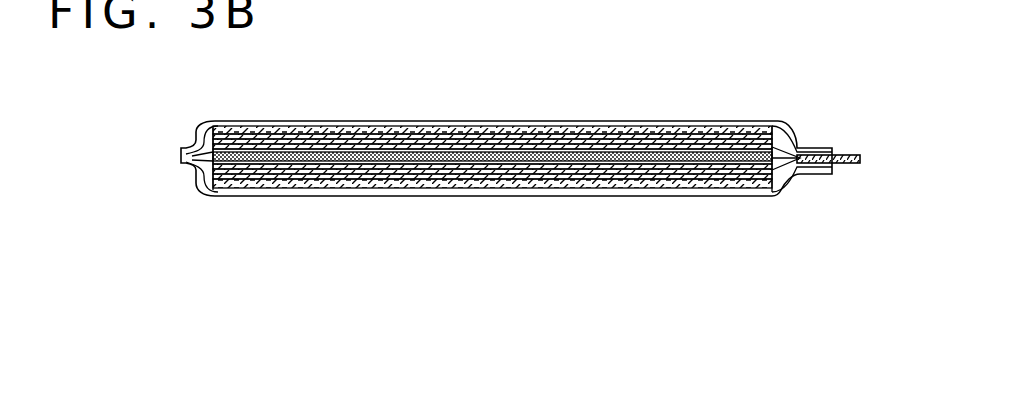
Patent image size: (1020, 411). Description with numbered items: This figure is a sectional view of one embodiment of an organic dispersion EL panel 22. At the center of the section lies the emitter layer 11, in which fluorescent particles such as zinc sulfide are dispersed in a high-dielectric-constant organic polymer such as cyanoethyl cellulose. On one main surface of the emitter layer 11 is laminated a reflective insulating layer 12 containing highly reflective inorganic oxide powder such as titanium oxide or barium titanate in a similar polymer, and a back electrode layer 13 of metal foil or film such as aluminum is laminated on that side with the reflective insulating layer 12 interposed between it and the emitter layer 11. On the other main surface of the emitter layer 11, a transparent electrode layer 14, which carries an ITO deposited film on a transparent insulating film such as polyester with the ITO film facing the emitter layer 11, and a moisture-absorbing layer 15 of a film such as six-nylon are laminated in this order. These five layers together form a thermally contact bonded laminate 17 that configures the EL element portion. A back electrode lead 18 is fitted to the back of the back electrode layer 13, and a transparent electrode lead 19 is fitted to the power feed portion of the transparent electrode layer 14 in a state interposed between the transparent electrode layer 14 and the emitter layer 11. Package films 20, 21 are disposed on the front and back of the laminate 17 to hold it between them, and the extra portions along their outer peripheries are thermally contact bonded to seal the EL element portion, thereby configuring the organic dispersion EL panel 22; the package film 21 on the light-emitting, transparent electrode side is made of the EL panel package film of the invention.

The emitter layer 11 is at (593, 160).
The reflective insulating layer 12 is at (550, 168).
The back electrode layer 13 is at (717, 264).
The transparent electrode layer 14 is at (641, 150).
The moisture-absorbing layer 15 is at (690, 138).
The laminate 17 is at (492, 228).
The back electrode lead 18 is at (852, 168).
The transparent electrode lead 19 is at (786, 148).
The package film 20 is at (292, 197).
The package film 21 is at (290, 124).
The organic dispersion EL panel 22 is at (403, 242).